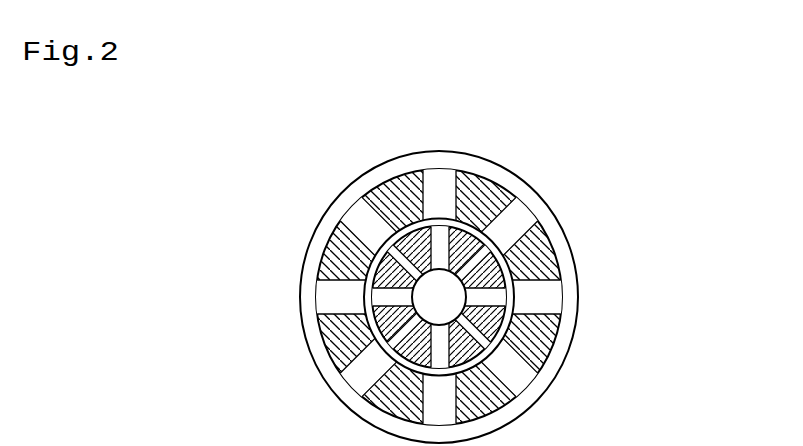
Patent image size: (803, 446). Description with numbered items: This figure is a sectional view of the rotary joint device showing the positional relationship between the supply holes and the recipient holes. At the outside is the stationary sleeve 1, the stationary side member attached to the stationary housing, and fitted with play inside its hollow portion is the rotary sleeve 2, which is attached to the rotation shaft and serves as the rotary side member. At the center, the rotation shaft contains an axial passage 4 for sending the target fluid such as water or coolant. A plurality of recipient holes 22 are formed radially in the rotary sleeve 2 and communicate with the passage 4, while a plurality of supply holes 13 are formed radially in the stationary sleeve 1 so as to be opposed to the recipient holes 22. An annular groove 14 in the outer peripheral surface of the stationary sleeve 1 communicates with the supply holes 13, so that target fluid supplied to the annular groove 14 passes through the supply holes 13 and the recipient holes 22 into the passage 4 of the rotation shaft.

The stationary sleeve 1 is at (497, 163).
The rotary sleeve 2 is at (493, 277).
The passage 4 is at (427, 297).
The supply holes 13 is at (441, 178).
The annular groove 14 is at (553, 366).
The recipient holes 22 is at (418, 277).